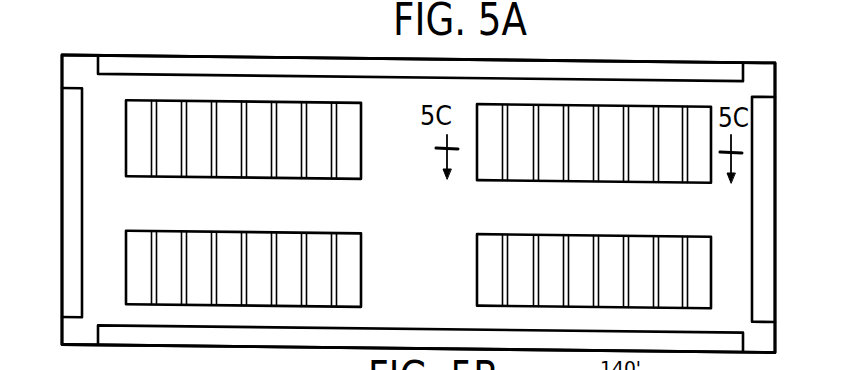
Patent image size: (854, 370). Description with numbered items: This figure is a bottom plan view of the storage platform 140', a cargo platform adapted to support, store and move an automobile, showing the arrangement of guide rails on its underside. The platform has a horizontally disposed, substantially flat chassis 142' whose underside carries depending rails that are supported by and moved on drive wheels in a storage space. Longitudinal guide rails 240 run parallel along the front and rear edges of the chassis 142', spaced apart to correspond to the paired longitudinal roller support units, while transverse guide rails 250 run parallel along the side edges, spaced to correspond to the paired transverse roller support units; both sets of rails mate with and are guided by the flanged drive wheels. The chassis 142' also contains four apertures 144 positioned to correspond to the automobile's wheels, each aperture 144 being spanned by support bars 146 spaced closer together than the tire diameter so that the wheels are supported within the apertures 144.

The storage platform 140' is at (418, 179).
The chassis 142' is at (418, 190).
The apertures 144 is at (233, 102).
The support bars 146 is at (298, 243).
The longitudinal guide rails 240 is at (308, 62).
The transverse guide rails 250 is at (73, 209).